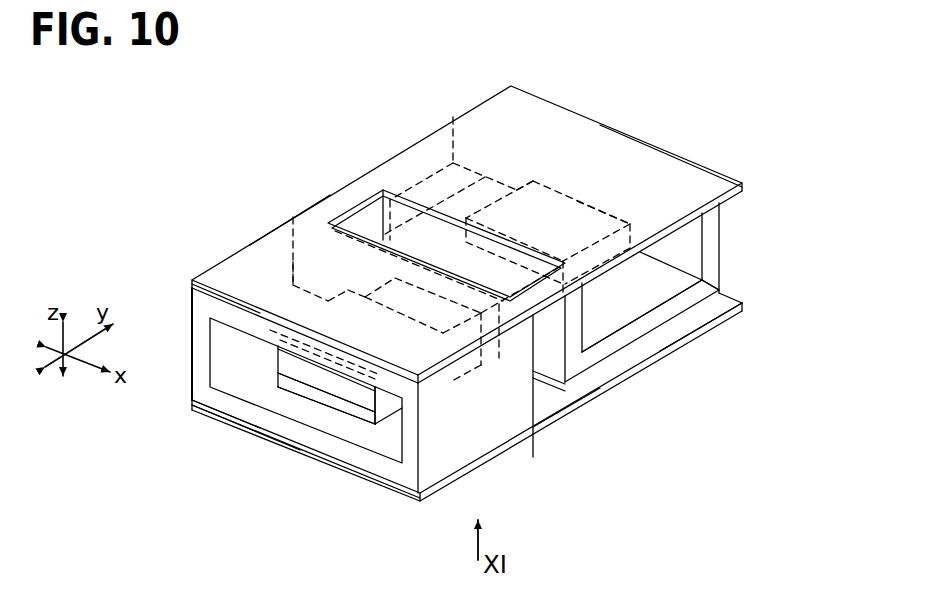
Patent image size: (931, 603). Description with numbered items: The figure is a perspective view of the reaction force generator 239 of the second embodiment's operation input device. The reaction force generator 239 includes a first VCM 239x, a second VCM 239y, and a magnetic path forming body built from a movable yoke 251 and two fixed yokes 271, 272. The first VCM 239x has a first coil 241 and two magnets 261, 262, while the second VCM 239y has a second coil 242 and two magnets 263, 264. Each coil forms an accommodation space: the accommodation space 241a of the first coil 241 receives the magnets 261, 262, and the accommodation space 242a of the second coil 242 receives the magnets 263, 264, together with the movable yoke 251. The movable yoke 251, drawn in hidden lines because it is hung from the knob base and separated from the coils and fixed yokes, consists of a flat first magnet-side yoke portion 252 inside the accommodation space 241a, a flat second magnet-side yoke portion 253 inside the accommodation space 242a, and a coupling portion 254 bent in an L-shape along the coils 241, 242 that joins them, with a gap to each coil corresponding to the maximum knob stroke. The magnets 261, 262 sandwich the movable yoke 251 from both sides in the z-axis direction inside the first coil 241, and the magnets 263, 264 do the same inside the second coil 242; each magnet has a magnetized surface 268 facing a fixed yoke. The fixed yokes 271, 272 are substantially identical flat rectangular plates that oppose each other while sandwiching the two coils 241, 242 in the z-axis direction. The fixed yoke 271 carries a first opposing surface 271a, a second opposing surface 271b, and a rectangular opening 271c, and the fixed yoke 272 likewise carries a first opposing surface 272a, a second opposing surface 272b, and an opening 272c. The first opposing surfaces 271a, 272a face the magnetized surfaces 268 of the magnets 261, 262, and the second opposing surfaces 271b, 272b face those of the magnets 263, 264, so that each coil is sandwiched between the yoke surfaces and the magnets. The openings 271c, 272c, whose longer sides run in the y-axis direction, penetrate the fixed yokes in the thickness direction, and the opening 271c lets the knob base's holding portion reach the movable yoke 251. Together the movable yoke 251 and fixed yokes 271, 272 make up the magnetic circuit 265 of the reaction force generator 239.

The reaction force generator 239 is at (456, 289).
The first VCM 239x is at (668, 112).
The second VCM 239y is at (240, 450).
The first coil 241 is at (690, 254).
The accommodation space 241a is at (692, 264).
The second coil 242 is at (341, 404).
The accommodation space 242a is at (207, 332).
The movable yoke 251 is at (293, 230).
The first magnet-side yoke portion 252 is at (485, 177).
The second magnet-side yoke portion 253 is at (303, 376).
The coupling portion 254 is at (392, 200).
The magnet 261 is at (577, 200).
The magnet 262 is at (600, 308).
The magnet 263 is at (293, 285).
The magnet 264 is at (358, 410).
The magnetic circuit 265 is at (280, 188).
The magnetized surface 268 is at (372, 411).
The fixed yoke 271 is at (456, 209).
The first opposing surface 271a is at (683, 232).
The second opposing surface 271b is at (195, 290).
The opening 271c is at (352, 200).
The fixed yoke 272 is at (458, 397).
The first opposing surface 272a is at (702, 312).
The second opposing surface 272b is at (192, 402).
The opening 272c is at (560, 408).